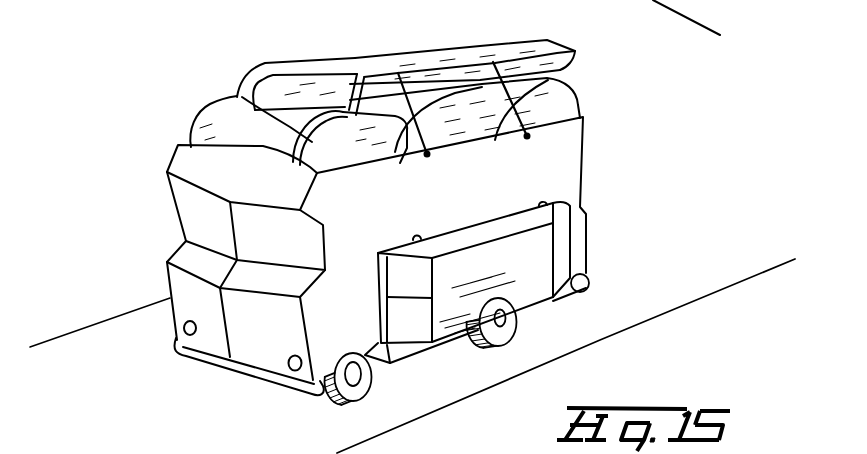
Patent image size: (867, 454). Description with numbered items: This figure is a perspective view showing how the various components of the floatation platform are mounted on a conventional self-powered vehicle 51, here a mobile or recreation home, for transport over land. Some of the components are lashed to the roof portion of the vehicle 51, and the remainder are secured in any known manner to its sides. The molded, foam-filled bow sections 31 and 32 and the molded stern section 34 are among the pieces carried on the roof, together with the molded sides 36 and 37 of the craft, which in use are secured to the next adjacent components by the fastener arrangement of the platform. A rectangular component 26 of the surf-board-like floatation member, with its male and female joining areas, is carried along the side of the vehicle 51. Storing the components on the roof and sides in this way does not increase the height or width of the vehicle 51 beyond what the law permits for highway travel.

The component 26 is at (548, 240).
The bow section 31 is at (210, 120).
The bow section 32 is at (343, 146).
The stern section 34 is at (578, 104).
The side 36 is at (323, 62).
The side 37 is at (575, 56).
The vehicle 51 is at (590, 157).